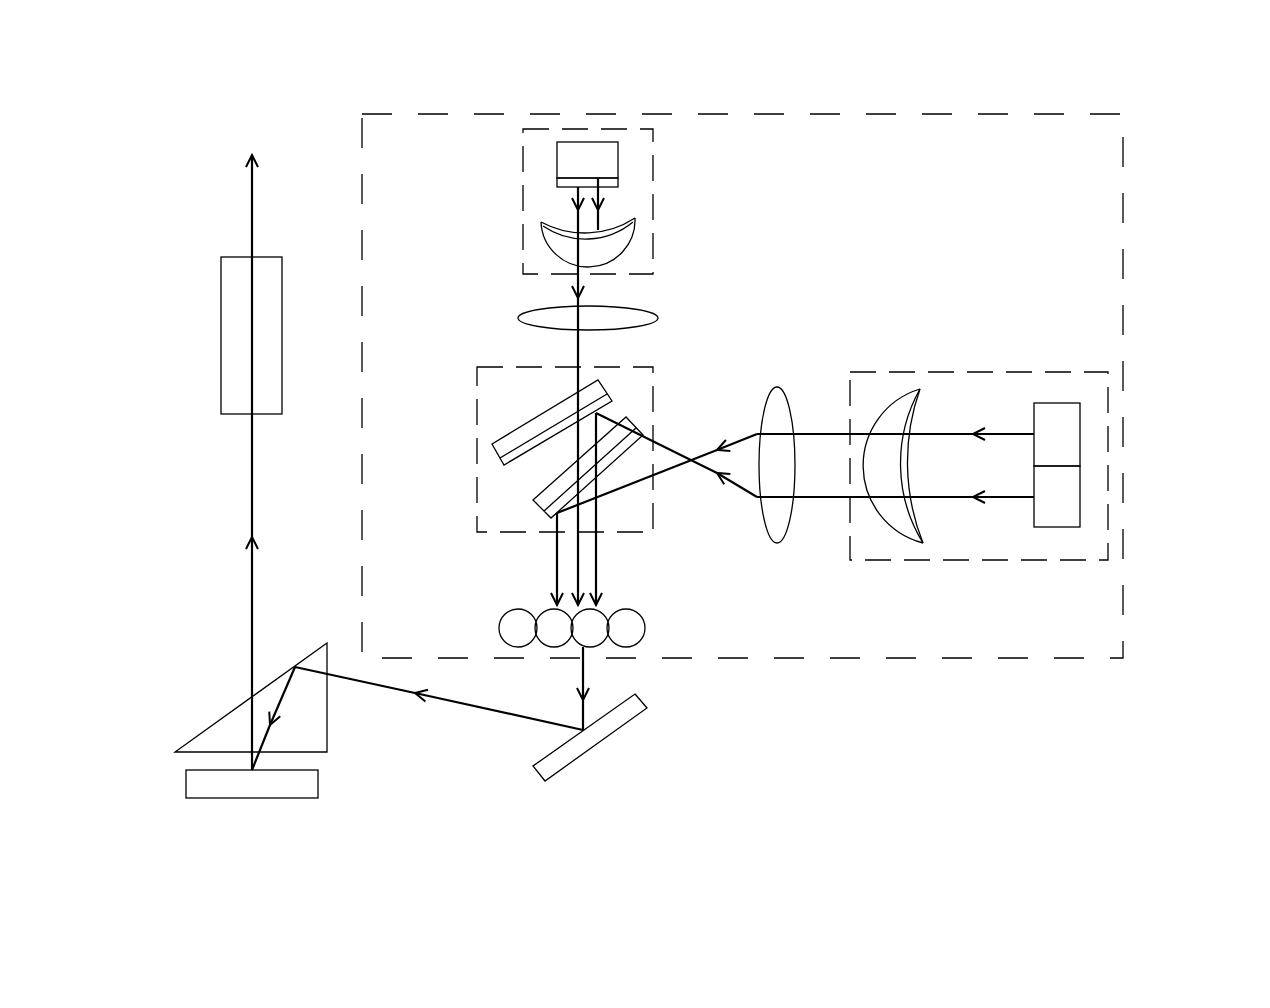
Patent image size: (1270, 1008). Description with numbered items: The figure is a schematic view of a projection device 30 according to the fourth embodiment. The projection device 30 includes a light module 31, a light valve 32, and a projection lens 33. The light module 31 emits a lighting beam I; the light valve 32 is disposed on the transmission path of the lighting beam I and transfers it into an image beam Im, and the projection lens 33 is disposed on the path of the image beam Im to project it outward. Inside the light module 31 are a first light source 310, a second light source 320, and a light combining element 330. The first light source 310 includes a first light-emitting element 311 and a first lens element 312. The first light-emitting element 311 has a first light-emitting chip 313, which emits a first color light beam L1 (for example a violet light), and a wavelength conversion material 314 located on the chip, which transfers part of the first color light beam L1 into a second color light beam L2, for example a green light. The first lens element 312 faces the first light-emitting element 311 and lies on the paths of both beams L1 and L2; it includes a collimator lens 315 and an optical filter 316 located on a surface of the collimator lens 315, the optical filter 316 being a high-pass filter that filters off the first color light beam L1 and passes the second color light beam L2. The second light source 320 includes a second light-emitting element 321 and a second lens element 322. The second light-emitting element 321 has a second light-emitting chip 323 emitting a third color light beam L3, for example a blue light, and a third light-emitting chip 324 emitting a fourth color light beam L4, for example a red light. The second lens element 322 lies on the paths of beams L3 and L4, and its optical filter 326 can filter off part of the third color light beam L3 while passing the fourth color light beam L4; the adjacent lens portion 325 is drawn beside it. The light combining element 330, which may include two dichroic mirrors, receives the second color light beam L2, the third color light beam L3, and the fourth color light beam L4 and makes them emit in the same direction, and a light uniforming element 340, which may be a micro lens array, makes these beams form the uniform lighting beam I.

The projection device 30 is at (1181, 125).
The light module 31 is at (1123, 187).
The light valve 32 is at (186, 787).
The projection lens 33 is at (221, 338).
The first light source 310 is at (548, 277).
The first light-emitting element 311 is at (670, 183).
The first lens element 312 is at (512, 220).
The first light-emitting chip 313 is at (618, 152).
The wavelength conversion material 314 is at (638, 203).
The collimator lens 315 is at (548, 248).
The optical filter 316 is at (544, 207).
The second light source 320 is at (1108, 397).
The second light-emitting element 321 is at (1152, 465).
The second lens element 322 is at (893, 392).
The second light-emitting chip 323 is at (1080, 500).
The third light-emitting chip 324 is at (1080, 450).
The first lens 325 is at (883, 403).
The optical filter 326 is at (924, 418).
The light combining element 330 is at (477, 452).
The light uniforming element 340 is at (500, 628).
The first color light beam L1 is at (603, 222).
The second color light beam L2 is at (573, 200).
The third color light beam L3 is at (997, 500).
The fourth color light beam L4 is at (1007, 433).
The lighting beam I is at (585, 680).
The image beam Im is at (253, 472).